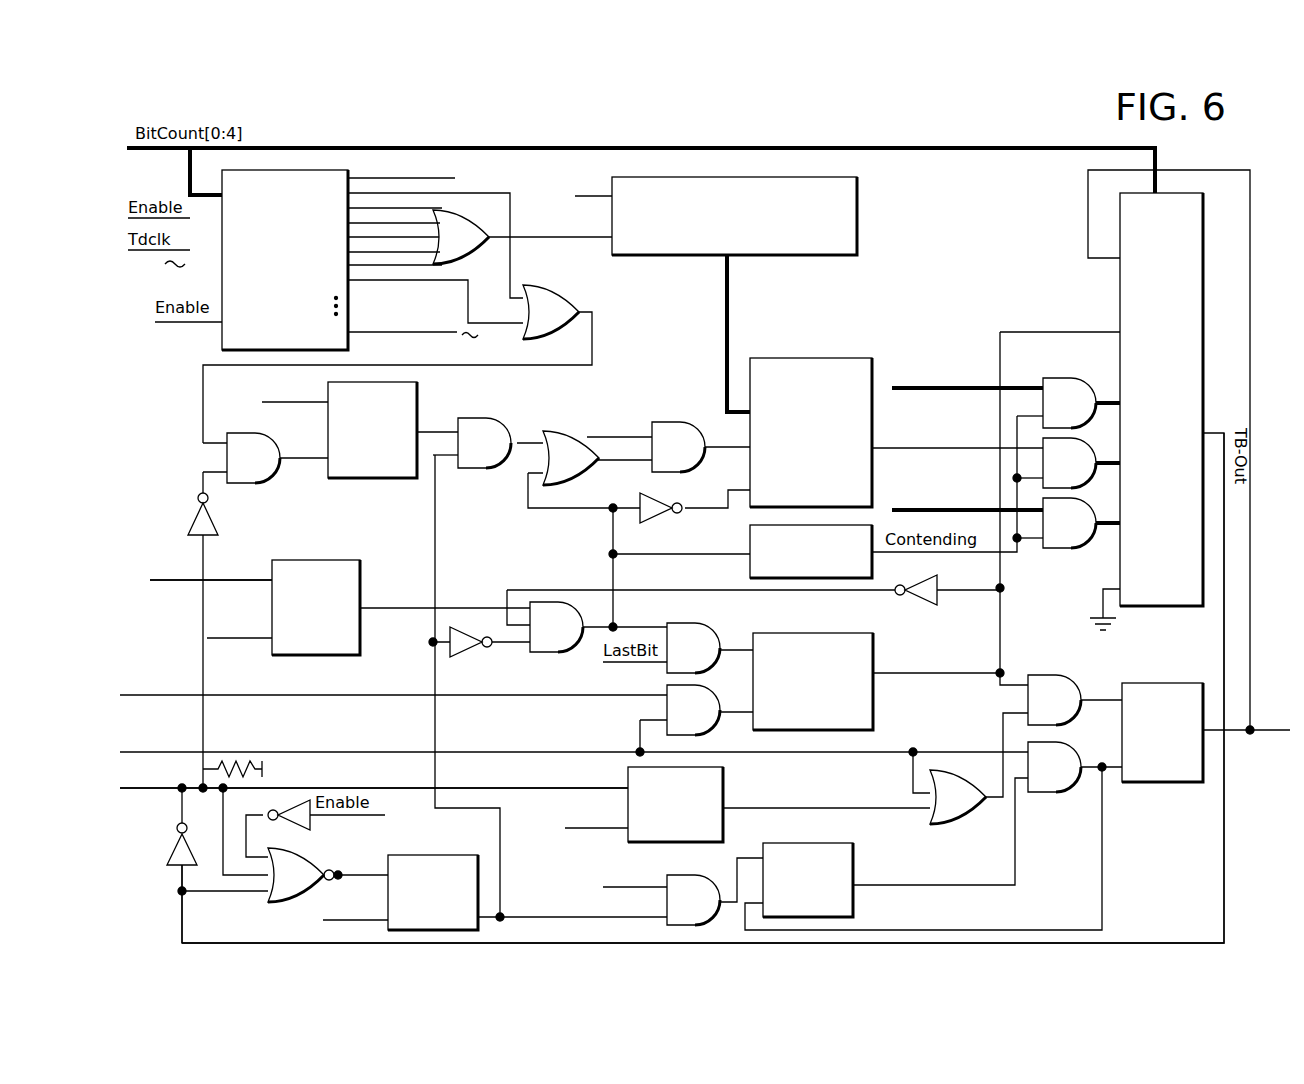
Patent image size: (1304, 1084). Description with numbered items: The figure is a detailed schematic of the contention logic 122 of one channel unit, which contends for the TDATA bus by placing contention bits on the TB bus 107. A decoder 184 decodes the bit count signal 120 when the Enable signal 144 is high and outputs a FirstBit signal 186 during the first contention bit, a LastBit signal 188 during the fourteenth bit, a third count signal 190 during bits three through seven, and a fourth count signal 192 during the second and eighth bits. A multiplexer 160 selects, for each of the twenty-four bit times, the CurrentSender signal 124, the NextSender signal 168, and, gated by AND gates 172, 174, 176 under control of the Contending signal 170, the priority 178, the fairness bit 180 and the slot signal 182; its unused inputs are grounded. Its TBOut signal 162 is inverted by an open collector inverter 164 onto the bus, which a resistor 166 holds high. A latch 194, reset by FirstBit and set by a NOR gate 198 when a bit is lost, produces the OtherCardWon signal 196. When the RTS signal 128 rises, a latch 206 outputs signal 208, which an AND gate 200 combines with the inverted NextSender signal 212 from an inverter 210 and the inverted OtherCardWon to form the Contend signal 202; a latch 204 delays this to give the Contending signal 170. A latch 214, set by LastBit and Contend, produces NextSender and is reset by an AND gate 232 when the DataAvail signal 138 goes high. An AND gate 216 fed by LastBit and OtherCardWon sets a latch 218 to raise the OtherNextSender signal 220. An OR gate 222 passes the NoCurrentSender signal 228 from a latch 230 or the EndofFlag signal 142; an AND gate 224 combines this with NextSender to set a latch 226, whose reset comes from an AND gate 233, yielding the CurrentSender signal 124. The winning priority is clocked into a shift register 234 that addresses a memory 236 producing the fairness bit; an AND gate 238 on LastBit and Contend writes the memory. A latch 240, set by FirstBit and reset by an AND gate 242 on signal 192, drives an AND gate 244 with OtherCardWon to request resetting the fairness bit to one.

The bit count signal 120 is at (272, 148).
The contention logic 122 is at (572, 145).
The Enable signal 144 is at (172, 188).
The decoder 184 is at (285, 260).
The FirstBit signal 186 is at (401, 167).
The LastBit signal 188 is at (413, 324).
The third count signal 190 is at (524, 234).
The fourth count signal 192 is at (592, 343).
The shift register 234 is at (716, 293).
The multiplexer 160 is at (1161, 399).
The AND gate 172 is at (1068, 403).
The AND gate 174 is at (1068, 463).
The AND gate 176 is at (1068, 523).
The priority 178 is at (925, 360).
The fairness bit 180 is at (957, 435).
The slot signal 182 is at (964, 497).
The Contending signal 170 is at (1017, 552).
The NextSender signal 168 is at (1000, 630).
The memory 236 is at (707, 432).
The AND gate 238 is at (668, 443).
The AND gate 242 is at (265, 458).
The latch 240 is at (360, 429).
The AND gate 244 is at (472, 443).
The latch 204 is at (811, 551).
The Contend signal 202 is at (679, 569).
The latch 206 is at (255, 606).
The output signal 208 is at (392, 608).
The AND gate 200 is at (598, 627).
The inverted NextSender signal 212 is at (514, 586).
The inverter 210 is at (908, 598).
The logic gate 198 is at (450, 668).
The OtherNextSender signal 220 is at (502, 660).
The latch 214 is at (876, 681).
The AND gate 232 is at (436, 720).
The DataAvail signal 138 is at (158, 696).
The EndofFlag signal 142 is at (570, 753).
The latch 230 is at (421, 804).
The NoCurrentSender signal 228 is at (826, 809).
The OR gate 222 is at (979, 768).
The AND gate 224 is at (1075, 700).
The AND gate 233 is at (933, 836).
The latch 226 is at (1162, 732).
The CurrentSender signal 124 is at (1258, 735).
The TBOut signal 162 is at (1224, 842).
The AND gate 216 is at (683, 891).
The latch 218 is at (880, 880).
The OtherCardWon signal 196 is at (572, 917).
The latch 194 is at (400, 892).
The TB bus 107 is at (373, 800).
The inverter 164 is at (175, 860).
The resistor 166 is at (224, 762).
The RTS signal 128 is at (211, 592).